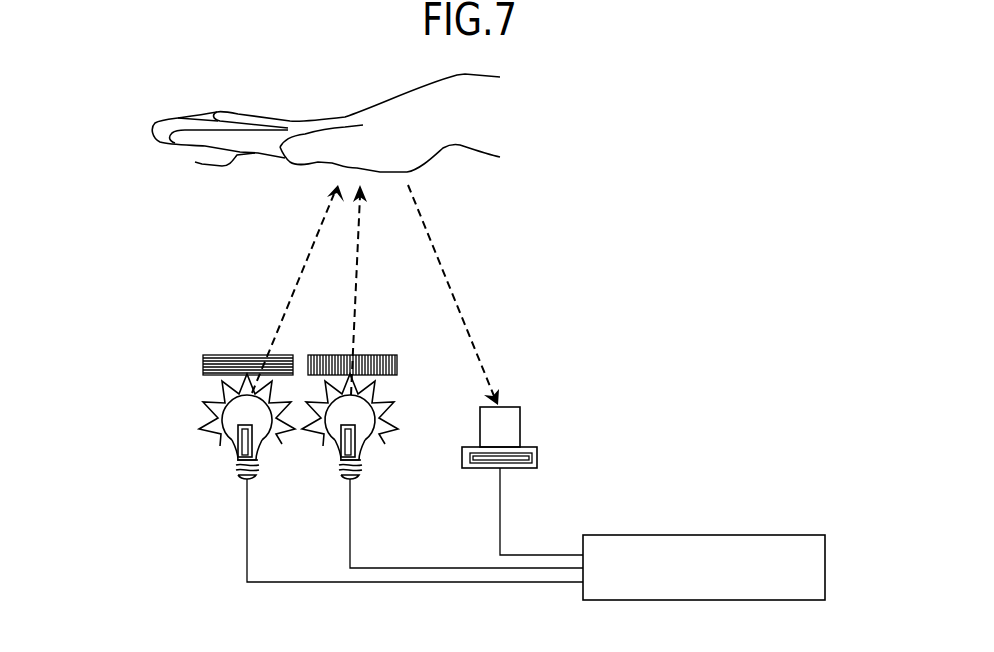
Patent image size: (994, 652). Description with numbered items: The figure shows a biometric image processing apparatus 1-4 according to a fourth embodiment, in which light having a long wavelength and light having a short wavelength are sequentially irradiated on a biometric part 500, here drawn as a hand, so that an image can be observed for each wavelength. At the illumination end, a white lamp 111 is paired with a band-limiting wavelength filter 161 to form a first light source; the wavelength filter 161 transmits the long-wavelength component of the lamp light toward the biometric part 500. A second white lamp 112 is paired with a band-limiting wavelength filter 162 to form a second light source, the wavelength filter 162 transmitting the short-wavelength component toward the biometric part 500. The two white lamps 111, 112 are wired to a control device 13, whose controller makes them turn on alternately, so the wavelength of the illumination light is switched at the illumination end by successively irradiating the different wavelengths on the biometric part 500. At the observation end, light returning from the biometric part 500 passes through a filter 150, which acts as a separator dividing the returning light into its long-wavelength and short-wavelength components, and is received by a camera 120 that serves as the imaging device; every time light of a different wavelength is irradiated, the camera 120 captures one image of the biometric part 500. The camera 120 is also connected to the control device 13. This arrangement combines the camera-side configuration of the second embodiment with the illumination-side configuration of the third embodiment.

The biometric part 500 is at (195, 162).
The biometric image processing apparatus 1-4 is at (508, 270).
The wavelength filter 161 is at (218, 353).
The wavelength filter 162 is at (382, 353).
The white lamp 111 is at (240, 478).
The white lamp 112 is at (358, 478).
The camera 120 is at (512, 404).
The filter 150 is at (538, 450).
The control device 13 is at (773, 535).